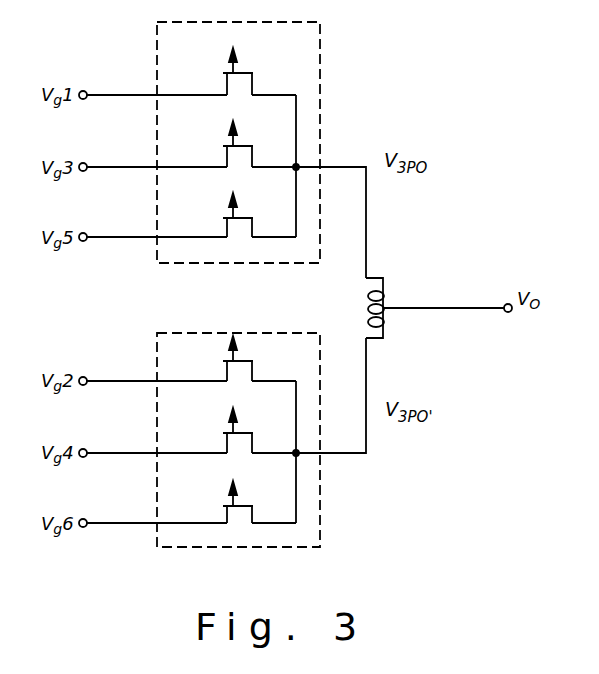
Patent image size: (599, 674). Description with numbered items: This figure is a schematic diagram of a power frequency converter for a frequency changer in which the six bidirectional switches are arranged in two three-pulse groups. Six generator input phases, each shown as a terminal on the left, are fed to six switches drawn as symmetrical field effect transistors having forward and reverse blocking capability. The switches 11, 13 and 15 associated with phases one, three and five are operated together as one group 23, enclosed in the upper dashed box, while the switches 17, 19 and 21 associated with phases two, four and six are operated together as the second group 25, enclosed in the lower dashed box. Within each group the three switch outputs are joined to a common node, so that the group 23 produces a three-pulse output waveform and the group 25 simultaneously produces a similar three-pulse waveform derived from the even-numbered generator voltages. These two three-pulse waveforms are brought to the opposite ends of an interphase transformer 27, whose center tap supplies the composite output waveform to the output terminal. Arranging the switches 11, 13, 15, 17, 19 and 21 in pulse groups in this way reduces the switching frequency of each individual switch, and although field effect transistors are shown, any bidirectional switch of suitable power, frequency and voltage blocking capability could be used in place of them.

The switch 11 is at (243, 73).
The switch 13 is at (243, 146).
The switch 15 is at (244, 218).
The switch 17 is at (243, 361).
The switch 19 is at (243, 433).
The switch 21 is at (245, 506).
The three-pulse group 23 is at (318, 64).
The three-pulse group 25 is at (318, 488).
The interphase transformer 27 is at (388, 283).